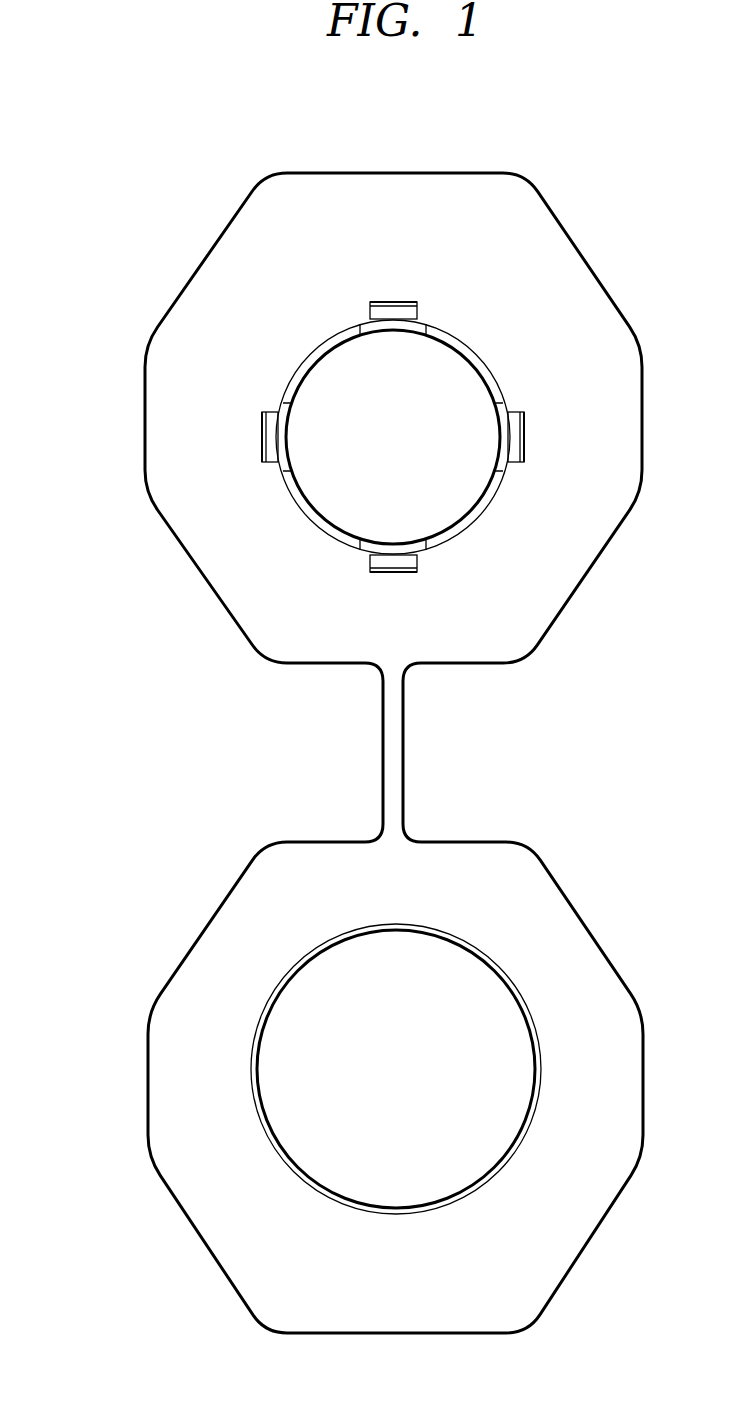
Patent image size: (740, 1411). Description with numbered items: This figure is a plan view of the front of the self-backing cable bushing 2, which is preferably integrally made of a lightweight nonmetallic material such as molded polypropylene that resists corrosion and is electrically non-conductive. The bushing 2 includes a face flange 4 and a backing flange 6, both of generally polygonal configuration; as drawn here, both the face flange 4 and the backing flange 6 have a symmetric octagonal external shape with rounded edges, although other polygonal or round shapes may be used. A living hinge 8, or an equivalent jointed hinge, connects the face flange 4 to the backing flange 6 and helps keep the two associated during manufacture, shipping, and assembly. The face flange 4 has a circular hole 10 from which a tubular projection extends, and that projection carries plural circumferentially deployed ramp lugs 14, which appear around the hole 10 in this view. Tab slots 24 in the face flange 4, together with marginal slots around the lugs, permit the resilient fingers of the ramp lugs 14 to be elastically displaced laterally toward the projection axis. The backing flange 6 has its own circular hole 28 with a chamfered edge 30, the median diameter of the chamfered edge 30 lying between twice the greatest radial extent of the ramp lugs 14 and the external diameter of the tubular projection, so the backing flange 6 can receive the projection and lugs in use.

The self-backing cable bushing 2 is at (145, 272).
The face flange 4 is at (218, 553).
The backing flange 6 is at (232, 922).
The living hinge 8 is at (405, 745).
The circular hole 10 is at (450, 392).
The ramp lugs 14 is at (378, 305).
The tab slots 24 is at (400, 302).
The circular hole 28 is at (395, 957).
The chamfered edge 30 is at (480, 955).